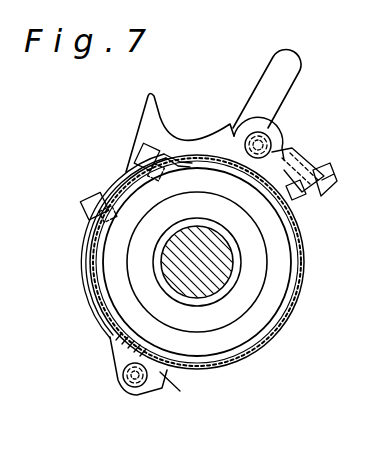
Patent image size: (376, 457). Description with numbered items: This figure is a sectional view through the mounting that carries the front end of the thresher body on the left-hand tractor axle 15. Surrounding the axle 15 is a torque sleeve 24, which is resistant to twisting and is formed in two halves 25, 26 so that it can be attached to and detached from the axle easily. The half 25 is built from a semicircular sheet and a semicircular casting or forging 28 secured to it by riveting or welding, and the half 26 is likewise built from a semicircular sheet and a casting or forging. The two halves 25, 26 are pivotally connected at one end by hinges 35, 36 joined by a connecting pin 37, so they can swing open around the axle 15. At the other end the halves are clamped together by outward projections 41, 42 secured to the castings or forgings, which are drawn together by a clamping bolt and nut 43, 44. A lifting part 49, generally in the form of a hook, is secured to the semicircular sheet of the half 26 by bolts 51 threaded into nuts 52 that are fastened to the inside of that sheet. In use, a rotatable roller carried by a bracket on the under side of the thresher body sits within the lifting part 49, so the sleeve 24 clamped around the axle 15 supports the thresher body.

The left-hand tractor axle 15 is at (198, 290).
The torque sleeve 24 is at (311, 273).
The half of torque sleeve 25 is at (236, 357).
The half of torque sleeve 26 is at (90, 268).
The semicircular casting or forging 28 is at (301, 301).
The hinge 35 is at (166, 380).
The hinge 36 is at (120, 360).
The connecting pin 37 is at (135, 388).
The outward projection 41 is at (303, 196).
The outward projection 42 is at (273, 140).
The clamping bolt 43 is at (278, 152).
The clamping nut 44 is at (323, 172).
The lifting part 49 is at (262, 80).
The bolts 51 is at (138, 158).
The nuts 52 is at (148, 165).